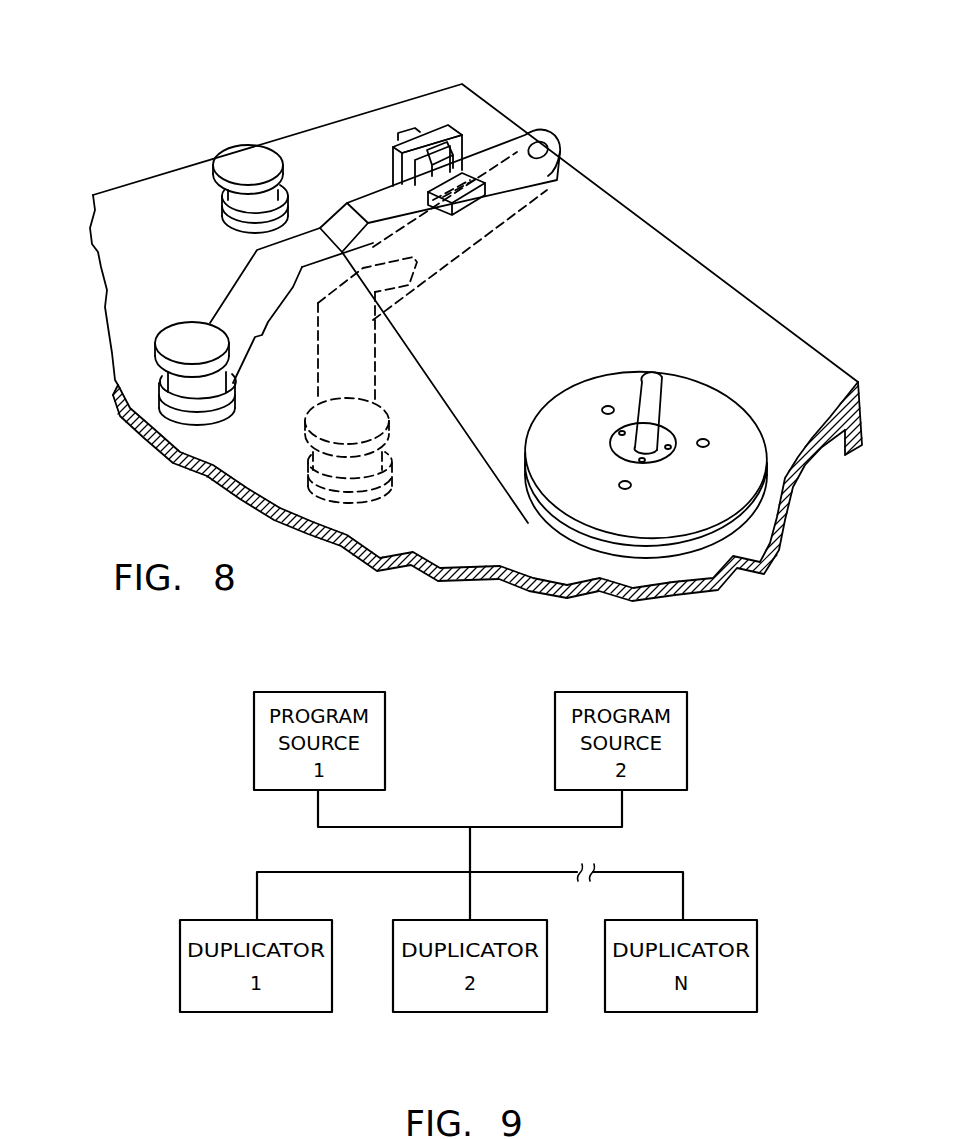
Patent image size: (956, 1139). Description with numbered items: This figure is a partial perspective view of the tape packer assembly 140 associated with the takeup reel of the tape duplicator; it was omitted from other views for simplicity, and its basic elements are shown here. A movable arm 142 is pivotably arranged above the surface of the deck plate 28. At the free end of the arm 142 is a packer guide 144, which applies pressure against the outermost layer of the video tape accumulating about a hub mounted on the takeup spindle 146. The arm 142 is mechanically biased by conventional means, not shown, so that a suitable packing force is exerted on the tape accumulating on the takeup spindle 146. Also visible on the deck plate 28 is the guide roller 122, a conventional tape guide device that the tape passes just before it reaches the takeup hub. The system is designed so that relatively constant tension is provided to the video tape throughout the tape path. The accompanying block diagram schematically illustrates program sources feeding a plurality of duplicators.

The tape packer assembly 140 is at (585, 113).
The deck plate 28 is at (578, 291).
The guide roller 122 is at (233, 158).
The movable arm 142 is at (337, 228).
The packer guide 144 is at (200, 388).
The takeup spindle 146 is at (655, 393).